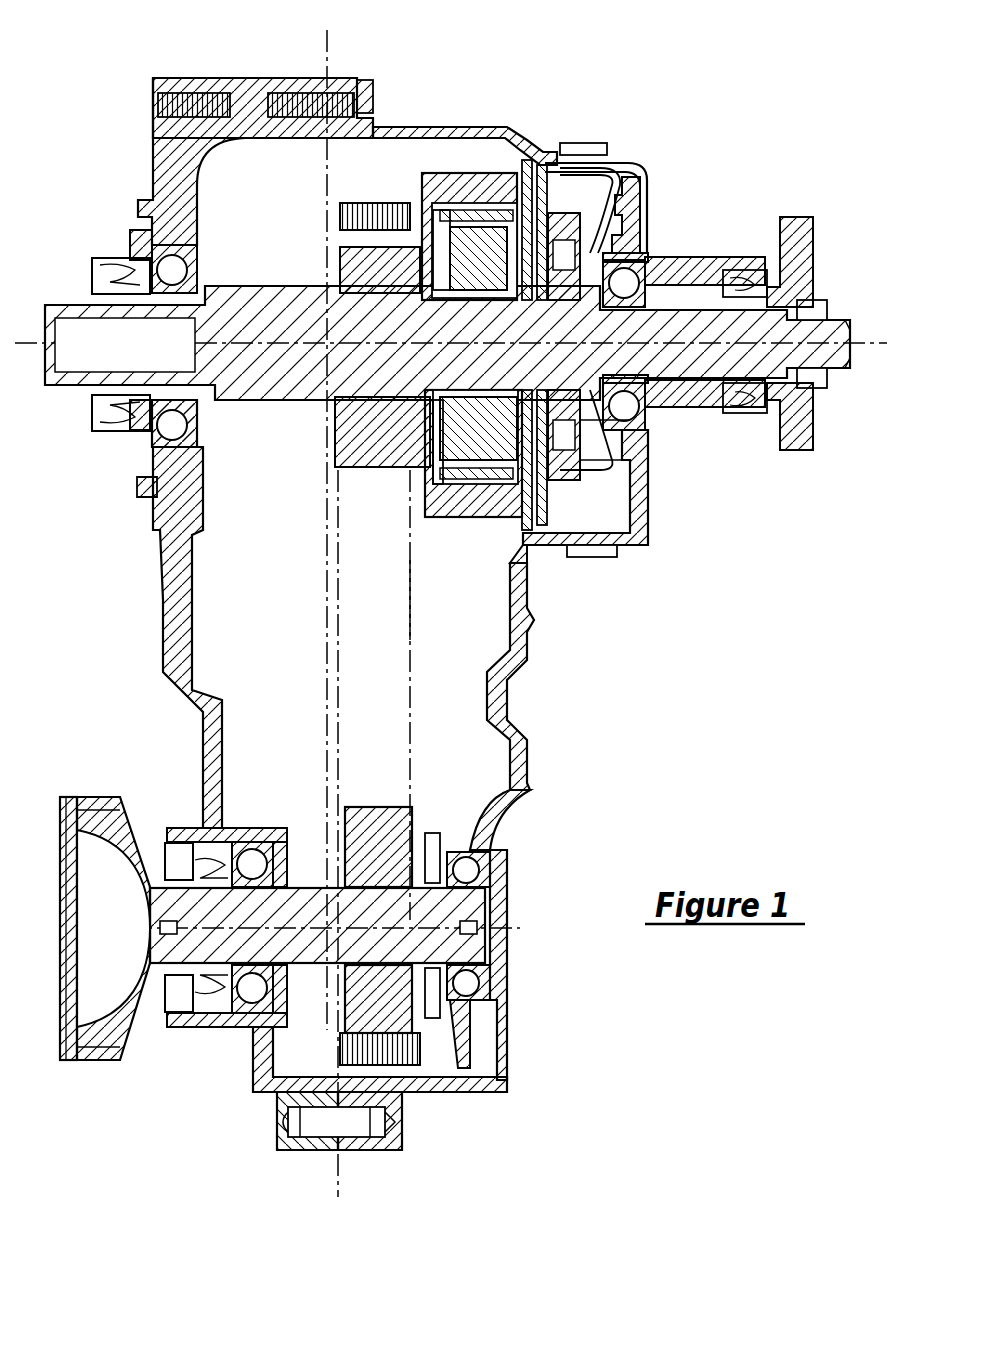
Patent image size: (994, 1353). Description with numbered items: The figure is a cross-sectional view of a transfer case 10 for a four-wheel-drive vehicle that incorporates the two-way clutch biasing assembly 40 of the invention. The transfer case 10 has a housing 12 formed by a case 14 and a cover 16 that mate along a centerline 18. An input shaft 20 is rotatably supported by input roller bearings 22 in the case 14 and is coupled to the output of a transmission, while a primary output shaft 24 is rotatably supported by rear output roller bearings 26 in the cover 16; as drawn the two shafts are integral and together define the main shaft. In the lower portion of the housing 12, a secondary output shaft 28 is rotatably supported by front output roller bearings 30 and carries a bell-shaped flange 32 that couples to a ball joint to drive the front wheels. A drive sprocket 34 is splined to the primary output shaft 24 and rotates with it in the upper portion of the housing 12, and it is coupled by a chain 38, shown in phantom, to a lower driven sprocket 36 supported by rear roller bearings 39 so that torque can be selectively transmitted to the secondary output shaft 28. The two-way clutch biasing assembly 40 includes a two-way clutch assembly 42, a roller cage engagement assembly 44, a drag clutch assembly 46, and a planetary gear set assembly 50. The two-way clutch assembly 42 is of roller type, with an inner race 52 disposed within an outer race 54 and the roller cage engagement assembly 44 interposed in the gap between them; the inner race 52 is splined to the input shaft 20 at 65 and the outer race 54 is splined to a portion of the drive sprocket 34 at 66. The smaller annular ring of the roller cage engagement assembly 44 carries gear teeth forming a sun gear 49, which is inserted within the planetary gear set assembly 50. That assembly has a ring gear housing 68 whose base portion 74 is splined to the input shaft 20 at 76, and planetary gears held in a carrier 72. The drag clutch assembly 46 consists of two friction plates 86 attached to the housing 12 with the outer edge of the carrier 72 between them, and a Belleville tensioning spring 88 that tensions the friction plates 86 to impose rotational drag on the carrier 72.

The transfer case 10 is at (183, 60).
The housing 12 is at (345, 72).
The case 14 is at (255, 90).
The cover 16 is at (400, 122).
The centerline 18 is at (320, 160).
The input shaft 20 is at (55, 400).
The input roller bearings 22 is at (140, 450).
The primary output shaft 24 is at (855, 335).
The rear output roller bearings 26 is at (650, 250).
The secondary output shaft 28 is at (125, 1030).
The front output roller bearings 30 is at (252, 850).
The bell-shaped flange 32 is at (92, 800).
The drive sprocket 34 is at (335, 430).
The lower driven sprocket 36 is at (415, 800).
The chain 38 is at (415, 605).
The rear roller bearings 39 is at (485, 860).
The two-way clutch biasing assembly 40 is at (560, 495).
The two-way clutch assembly 42 is at (438, 294).
The roller cage engagement assembly 44 is at (525, 305).
The drag clutch assembly 46 is at (516, 527).
The sun gear 49 is at (560, 305).
The planetary gear set assembly 50 is at (625, 160).
The inner race 52 is at (345, 270).
The outer race 54 is at (450, 182).
The splined engagement 65 is at (470, 300).
The splined engagement 66 is at (400, 470).
The ring gear housing 68 is at (645, 162).
The carrier 72 is at (590, 200).
The base portion 74 is at (605, 456).
The splined engagement 76 is at (605, 305).
The friction plates 86 is at (545, 162).
The Belleville tensioning spring 88 is at (532, 158).